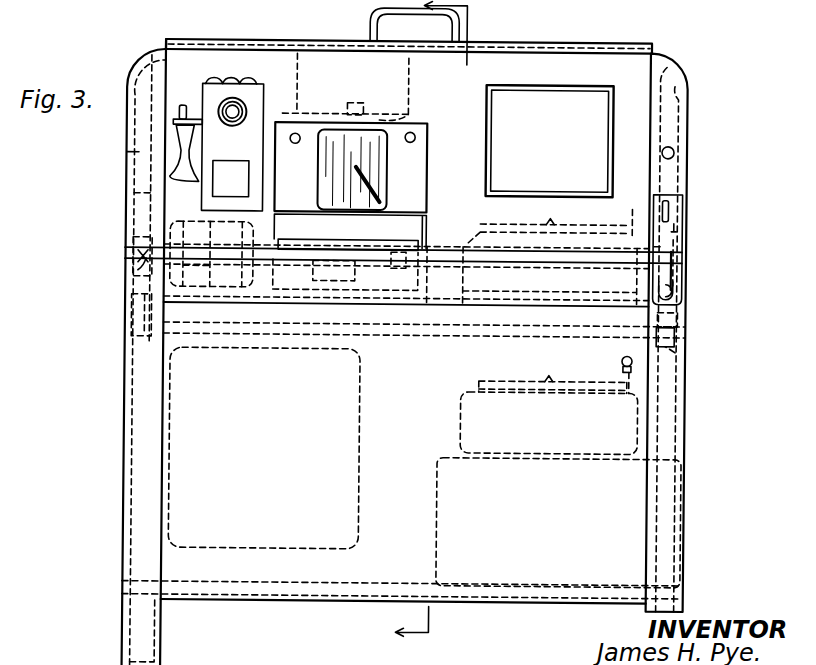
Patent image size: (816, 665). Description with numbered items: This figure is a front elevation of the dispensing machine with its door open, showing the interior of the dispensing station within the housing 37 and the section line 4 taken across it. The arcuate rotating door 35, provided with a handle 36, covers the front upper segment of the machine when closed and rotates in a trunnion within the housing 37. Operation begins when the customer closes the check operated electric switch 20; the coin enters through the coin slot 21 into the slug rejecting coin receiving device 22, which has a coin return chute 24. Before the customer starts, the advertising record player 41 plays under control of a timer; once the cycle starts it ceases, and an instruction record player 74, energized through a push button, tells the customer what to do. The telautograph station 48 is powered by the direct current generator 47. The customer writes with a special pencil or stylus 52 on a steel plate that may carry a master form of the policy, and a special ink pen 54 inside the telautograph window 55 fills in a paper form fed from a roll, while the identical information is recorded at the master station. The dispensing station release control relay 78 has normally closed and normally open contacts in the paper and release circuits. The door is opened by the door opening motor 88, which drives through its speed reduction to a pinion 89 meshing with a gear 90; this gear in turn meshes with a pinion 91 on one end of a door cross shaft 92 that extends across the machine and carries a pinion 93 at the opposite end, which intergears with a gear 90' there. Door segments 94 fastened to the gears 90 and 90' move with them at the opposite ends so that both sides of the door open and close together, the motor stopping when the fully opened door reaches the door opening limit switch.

The section line 4- 4 is at (441, 327).
The electric switch 20 is at (690, 214).
The coin slot 21 is at (671, 204).
The slug rejecting coin receiving device 22 is at (683, 263).
The coin return chute 24 is at (672, 286).
The arcuate rotating door 35 is at (624, 43).
The handle 36 is at (370, 22).
The housing 37 is at (532, 44).
The advertising record player 41 is at (404, 256).
The direct current generator 47 is at (265, 470).
The telautograph station 48 is at (419, 239).
The pencil or stylus 52 is at (626, 209).
The ink pen 54 is at (370, 191).
The telautograph window 55 is at (378, 158).
The instruction record player 74 is at (559, 471).
The dispensing station release control relay 78 is at (363, 88).
The door opening motor 88 is at (199, 222).
The pinion 89 is at (145, 266).
The gear 90 is at (115, 247).
The gear 90' is at (698, 326).
The pinion 91 is at (128, 345).
The door cross shaft 92 is at (317, 258).
The pinion 93 is at (678, 348).
The door segments 94 is at (128, 153).